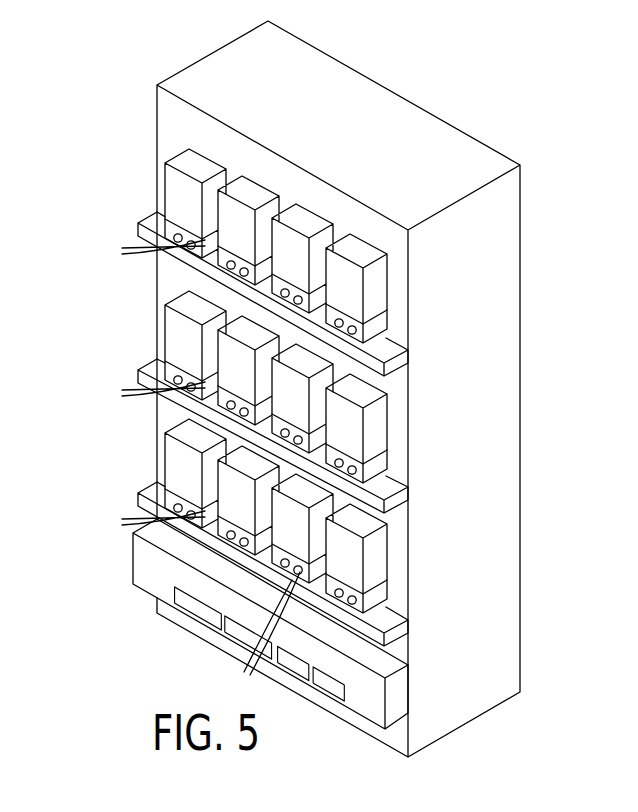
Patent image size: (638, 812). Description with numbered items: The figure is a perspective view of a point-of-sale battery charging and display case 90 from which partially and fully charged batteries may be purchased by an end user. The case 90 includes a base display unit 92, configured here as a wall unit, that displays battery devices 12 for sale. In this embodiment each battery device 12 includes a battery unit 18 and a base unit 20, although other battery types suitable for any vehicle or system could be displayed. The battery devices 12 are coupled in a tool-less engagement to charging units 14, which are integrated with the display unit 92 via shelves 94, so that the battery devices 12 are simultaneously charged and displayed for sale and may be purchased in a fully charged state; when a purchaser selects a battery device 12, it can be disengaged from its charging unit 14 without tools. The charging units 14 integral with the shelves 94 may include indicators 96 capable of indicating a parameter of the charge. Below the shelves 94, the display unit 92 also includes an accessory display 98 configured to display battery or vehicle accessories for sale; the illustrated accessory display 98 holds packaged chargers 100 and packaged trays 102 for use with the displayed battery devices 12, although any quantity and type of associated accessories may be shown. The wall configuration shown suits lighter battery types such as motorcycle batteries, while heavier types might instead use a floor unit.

The point-of-sale battery charging and display case 90 is at (441, 81).
The base display unit 92 is at (160, 110).
The shelves 94 is at (397, 363).
The battery devices 12 is at (280, 365).
The battery unit 18 is at (178, 176).
The charging units 14 is at (163, 233).
The base unit 20 is at (180, 227).
The indicators 96 is at (198, 471).
The accessory display 98 is at (377, 703).
The packaged chargers 100 is at (223, 645).
The packaged trays 102 is at (320, 697).